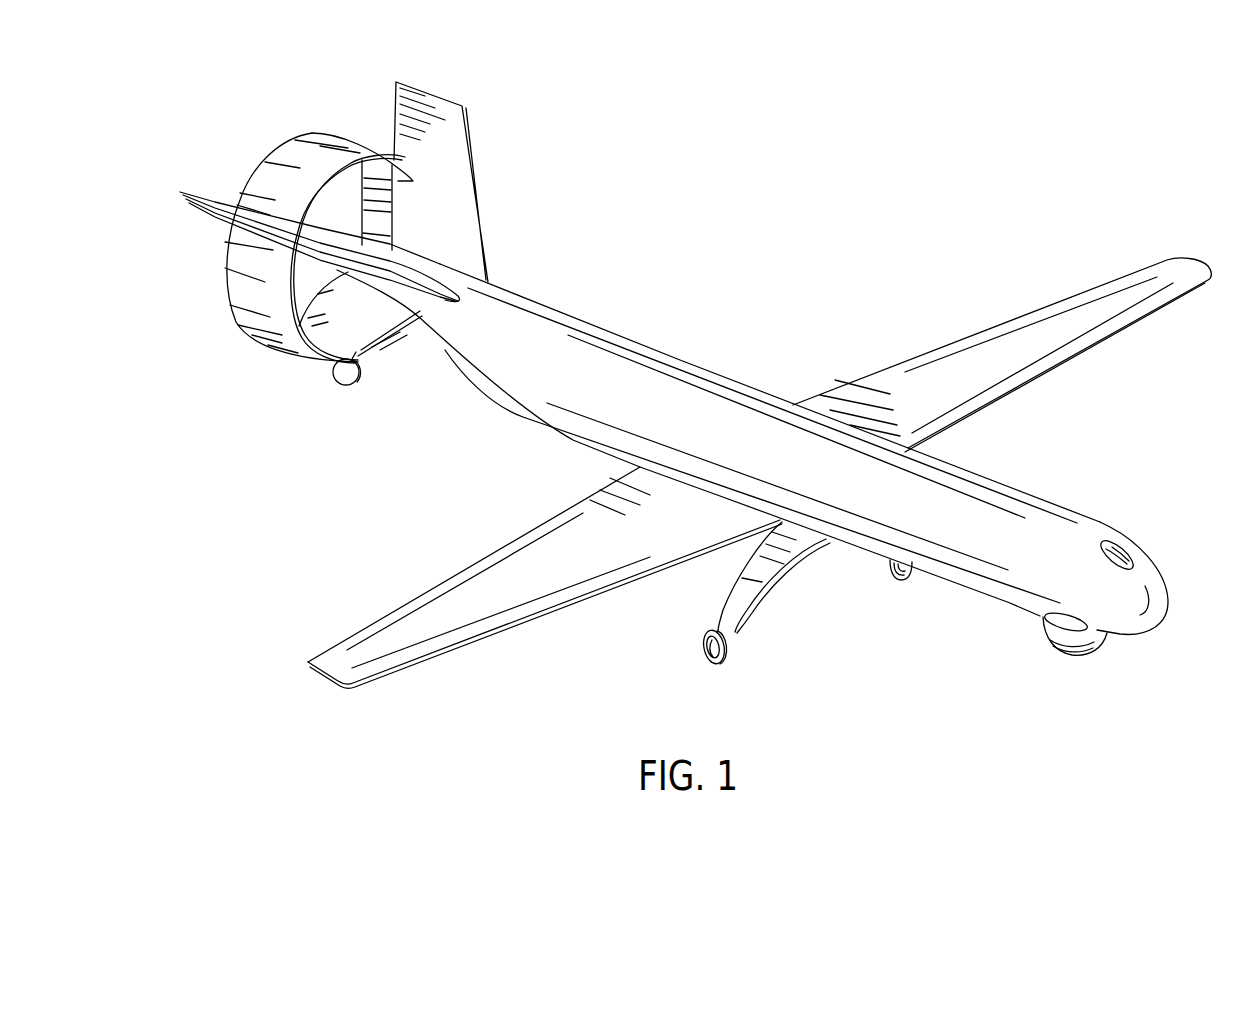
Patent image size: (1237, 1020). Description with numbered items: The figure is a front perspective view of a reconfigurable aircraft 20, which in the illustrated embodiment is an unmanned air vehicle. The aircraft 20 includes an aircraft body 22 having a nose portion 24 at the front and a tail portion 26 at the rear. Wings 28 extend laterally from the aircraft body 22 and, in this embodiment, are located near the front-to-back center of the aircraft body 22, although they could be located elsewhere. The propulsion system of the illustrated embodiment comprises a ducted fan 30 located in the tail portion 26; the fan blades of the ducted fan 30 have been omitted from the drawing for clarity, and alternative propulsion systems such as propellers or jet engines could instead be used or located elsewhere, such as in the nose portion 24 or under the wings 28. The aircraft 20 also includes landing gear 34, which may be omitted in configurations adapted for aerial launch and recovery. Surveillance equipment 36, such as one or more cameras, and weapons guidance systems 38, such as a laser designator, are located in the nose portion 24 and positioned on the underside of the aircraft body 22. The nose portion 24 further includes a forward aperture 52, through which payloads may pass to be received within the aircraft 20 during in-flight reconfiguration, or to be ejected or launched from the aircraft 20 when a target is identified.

The reconfigurable aircraft 20 is at (877, 263).
The aircraft body 22 is at (713, 436).
The nose portion 24 is at (1050, 588).
The tail portion 26 is at (420, 318).
The wings 28 is at (990, 386).
The ducted fan 30 is at (296, 148).
The landing gear 34 is at (733, 590).
The surveillance equipment 36 is at (1110, 637).
The weapons guidance systems 38 is at (1080, 655).
The forward aperture 52 is at (1118, 558).